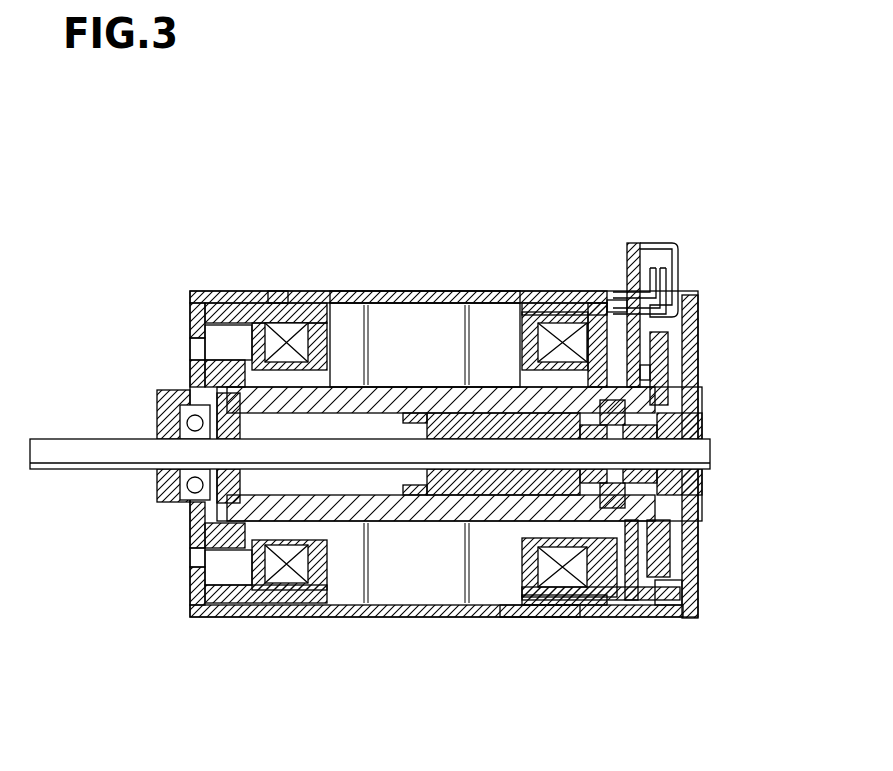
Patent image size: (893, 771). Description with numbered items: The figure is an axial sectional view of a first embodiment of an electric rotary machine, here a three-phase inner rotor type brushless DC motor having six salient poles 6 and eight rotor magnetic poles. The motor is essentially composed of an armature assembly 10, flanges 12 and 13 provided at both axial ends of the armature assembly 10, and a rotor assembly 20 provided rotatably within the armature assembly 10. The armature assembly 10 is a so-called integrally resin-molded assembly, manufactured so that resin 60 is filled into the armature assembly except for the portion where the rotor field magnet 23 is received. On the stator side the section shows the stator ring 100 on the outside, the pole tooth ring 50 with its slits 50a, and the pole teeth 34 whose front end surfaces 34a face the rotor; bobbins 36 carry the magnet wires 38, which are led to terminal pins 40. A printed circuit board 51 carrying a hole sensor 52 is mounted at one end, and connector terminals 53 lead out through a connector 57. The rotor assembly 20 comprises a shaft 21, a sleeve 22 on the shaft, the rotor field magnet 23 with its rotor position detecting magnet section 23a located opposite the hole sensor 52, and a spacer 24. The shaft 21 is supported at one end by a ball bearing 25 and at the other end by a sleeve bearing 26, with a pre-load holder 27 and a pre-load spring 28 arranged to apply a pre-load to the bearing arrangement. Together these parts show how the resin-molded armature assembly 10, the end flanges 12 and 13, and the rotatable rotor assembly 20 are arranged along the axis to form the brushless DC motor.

The armature assembly 10 is at (362, 258).
The salient poles 6 is at (446, 350).
The flange 12 is at (190, 322).
The flange 13 is at (690, 318).
The rotor assembly 20 is at (487, 530).
The shaft 21 is at (92, 450).
The sleeve 22 is at (455, 485).
The rotor field magnet 23 is at (418, 510).
The rotor position detecting magnet section 23a is at (670, 617).
The spacer 24 is at (193, 565).
The ball bearing 25 is at (185, 500).
The sleeve bearing 26 is at (688, 432).
The pre-load holder 27 is at (640, 510).
The pre-load spring 28 is at (658, 475).
The pole teeth 34 is at (487, 330).
The front end surfaces 34a is at (418, 300).
The bobbins 36 is at (540, 320).
The magnet wires 38 is at (575, 300).
The terminal pins 40 is at (660, 617).
The pole tooth ring 50 is at (537, 617).
The slits in pole tooth ring 50a is at (275, 292).
The printed circuit board 51 is at (633, 245).
The hole sensor 52 is at (648, 373).
The connector terminals 53 is at (655, 283).
The connector 57 is at (668, 250).
The resin 60 is at (220, 360).
The stator ring 100 is at (222, 617).